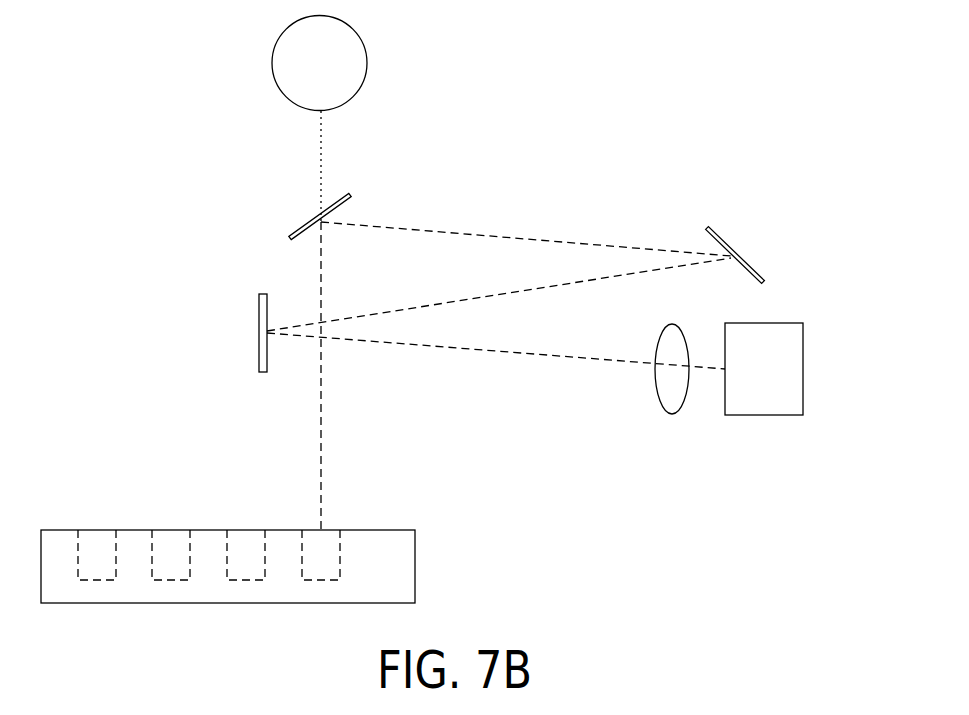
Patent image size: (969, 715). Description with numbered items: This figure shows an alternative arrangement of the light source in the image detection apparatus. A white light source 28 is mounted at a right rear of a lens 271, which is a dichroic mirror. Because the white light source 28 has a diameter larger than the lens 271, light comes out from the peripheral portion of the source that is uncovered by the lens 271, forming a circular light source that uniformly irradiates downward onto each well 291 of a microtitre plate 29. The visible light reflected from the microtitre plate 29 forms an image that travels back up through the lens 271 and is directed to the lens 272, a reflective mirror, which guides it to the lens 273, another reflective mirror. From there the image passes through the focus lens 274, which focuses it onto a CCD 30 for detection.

The white light source 28 is at (366, 78).
The lens (dichroic mirror) 271 is at (296, 234).
The lens (reflective mirror) 272 is at (728, 244).
The lens (reflective mirror) 273 is at (262, 315).
The focus lens 274 is at (658, 403).
The CCD 30 is at (803, 369).
The microtitre plate 29 is at (398, 560).
The well 291 is at (328, 550).